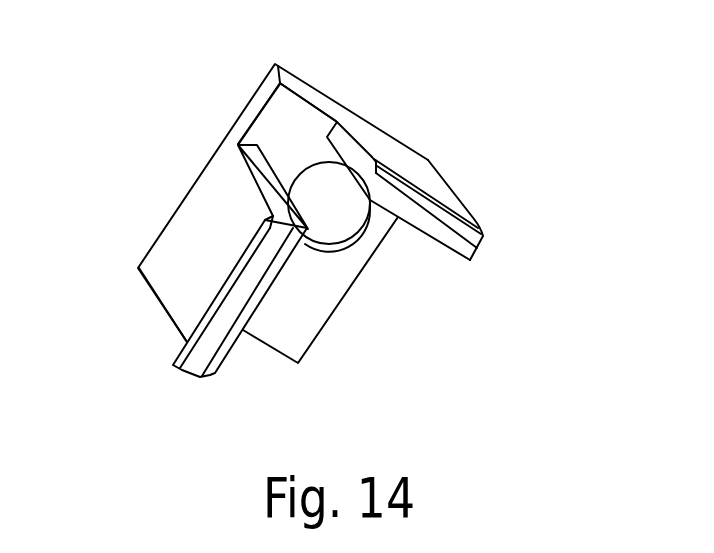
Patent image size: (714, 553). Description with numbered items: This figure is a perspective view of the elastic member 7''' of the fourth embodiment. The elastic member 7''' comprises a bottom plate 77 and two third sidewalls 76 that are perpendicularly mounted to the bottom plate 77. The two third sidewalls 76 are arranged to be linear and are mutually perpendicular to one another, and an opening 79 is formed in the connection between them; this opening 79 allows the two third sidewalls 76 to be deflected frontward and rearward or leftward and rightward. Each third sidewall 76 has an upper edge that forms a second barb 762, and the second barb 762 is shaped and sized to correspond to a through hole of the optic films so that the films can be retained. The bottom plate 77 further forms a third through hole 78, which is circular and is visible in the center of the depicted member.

The elastic member 7''' is at (271, 184).
The third sidewall 76 is at (218, 257).
The bottom plate 77 is at (303, 308).
The third through hole 78 is at (327, 207).
The opening 79 is at (288, 138).
The second barb 762 is at (432, 210).